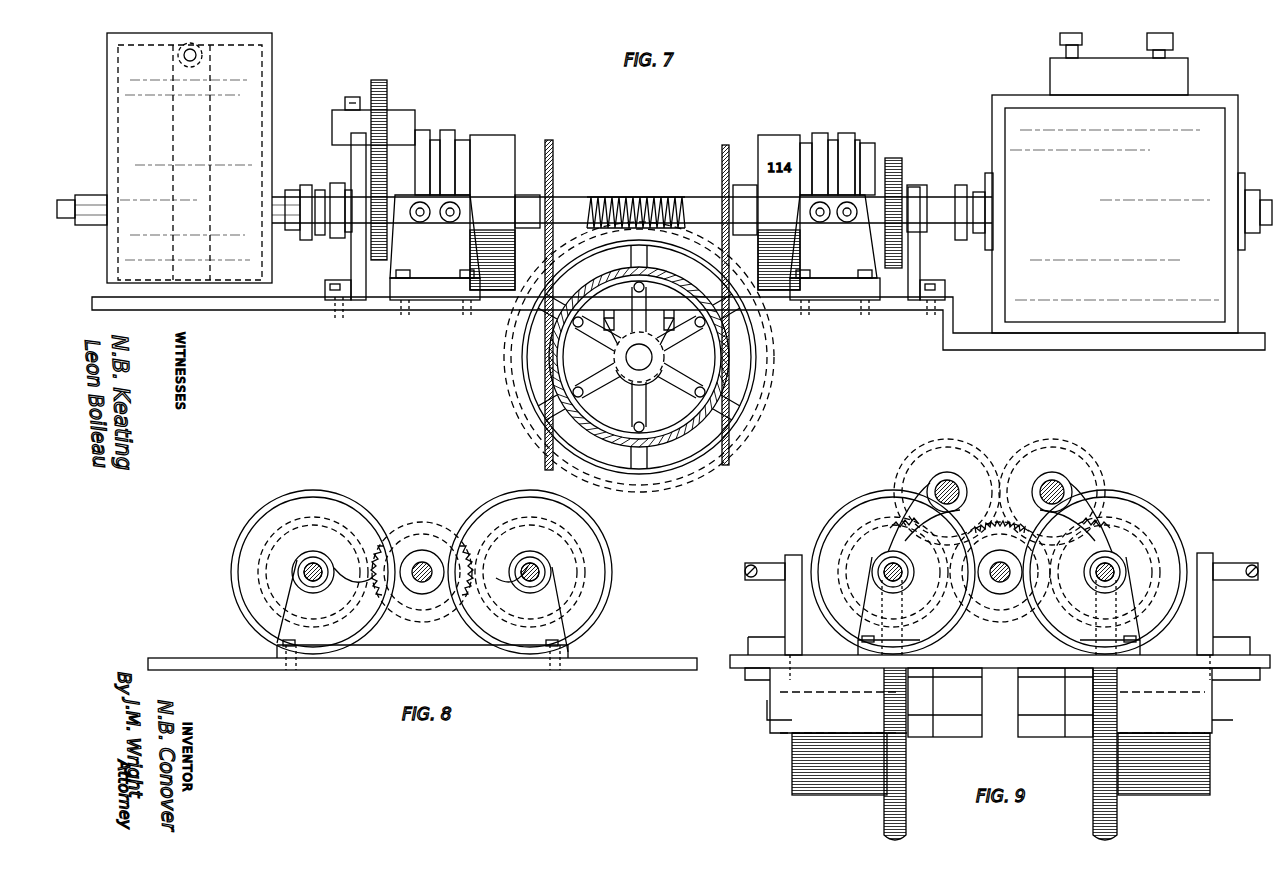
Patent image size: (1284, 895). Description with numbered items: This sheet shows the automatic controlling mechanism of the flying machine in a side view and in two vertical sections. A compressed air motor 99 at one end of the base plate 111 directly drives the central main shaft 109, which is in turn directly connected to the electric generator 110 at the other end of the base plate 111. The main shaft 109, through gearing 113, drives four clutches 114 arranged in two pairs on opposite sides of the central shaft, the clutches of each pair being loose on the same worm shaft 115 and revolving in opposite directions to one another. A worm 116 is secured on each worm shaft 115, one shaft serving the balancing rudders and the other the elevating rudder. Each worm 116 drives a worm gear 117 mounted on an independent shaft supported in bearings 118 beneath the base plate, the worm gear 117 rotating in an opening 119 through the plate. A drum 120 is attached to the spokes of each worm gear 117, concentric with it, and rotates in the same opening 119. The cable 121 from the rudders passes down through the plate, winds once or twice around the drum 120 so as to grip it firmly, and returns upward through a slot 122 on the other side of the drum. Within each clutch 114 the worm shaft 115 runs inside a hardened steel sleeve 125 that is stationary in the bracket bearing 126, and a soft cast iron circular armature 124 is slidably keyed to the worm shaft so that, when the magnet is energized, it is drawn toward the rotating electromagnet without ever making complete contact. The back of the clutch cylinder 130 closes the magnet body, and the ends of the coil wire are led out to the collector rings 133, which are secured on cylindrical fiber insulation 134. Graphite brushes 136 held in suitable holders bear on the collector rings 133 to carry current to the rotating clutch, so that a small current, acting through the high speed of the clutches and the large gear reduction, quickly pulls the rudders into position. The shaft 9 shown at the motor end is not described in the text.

In FIG. 7, the drive shaft 9 is at (68, 203).
In FIG. 7, the compressed air motor 99 is at (189, 158).
In FIG. 8, the main shaft 109 is at (423, 565).
In FIG. 9, the main shaft 109 is at (1000, 580).
In FIG. 7, the electric generator 110 is at (1115, 183).
In FIG. 7, the base plate 111 is at (977, 345).
In FIG. 8, the base plate 111 is at (699, 666).
In FIG. 8, the gearing 113 is at (422, 564).
In FIG. 9, the gearing 113 is at (1000, 531).
In FIG. 7, the clutch 114 is at (492, 212).
In FIG. 8, the clutch 114 is at (612, 556).
In FIG. 9, the clutch 114 is at (1165, 522).
In FIG. 7, the worm shaft 115 is at (528, 195).
In FIG. 8, the worm shaft 115 is at (306, 563).
In FIG. 9, the worm shaft 115 is at (903, 570).
In FIG. 7, the worm 116 is at (668, 196).
In FIG. 7, the worm gear 117 is at (640, 236).
In FIG. 9, the worm gear 117 is at (906, 770).
In FIG. 7, the bearing 118 is at (612, 344).
In FIG. 9, the bearing 118 is at (1000, 702).
In FIG. 7, the opening 119 is at (514, 300).
In FIG. 9, the opening 119 is at (905, 662).
In FIG. 7, the drum 120 is at (618, 430).
In FIG. 9, the drum 120 is at (1002, 731).
In FIG. 7, the cable 121 is at (712, 305).
In FIG. 7, the slot 122 is at (712, 292).
In FIG. 7, the circular armature 124 is at (552, 142).
In FIG. 7, the hardened steel sleeve 125 is at (340, 186).
In FIG. 8, the hardened steel sleeve 125 is at (355, 567).
In FIG. 9, the hardened steel sleeve 125 is at (878, 565).
In FIG. 7, the bracket bearing 126 is at (342, 173).
In FIG. 9, the bracket bearing 126 is at (1092, 548).
In FIG. 7, the back of the clutch cylinder 130 is at (349, 170).
In FIG. 7, the collector ring 133 is at (426, 130).
In FIG. 8, the collector ring 133 is at (360, 500).
In FIG. 9, the collector ring 133 is at (838, 528).
In FIG. 7, the cylindrical fiber insulation 134 is at (450, 132).
In FIG. 9, the graphite brush 136 is at (1190, 560).